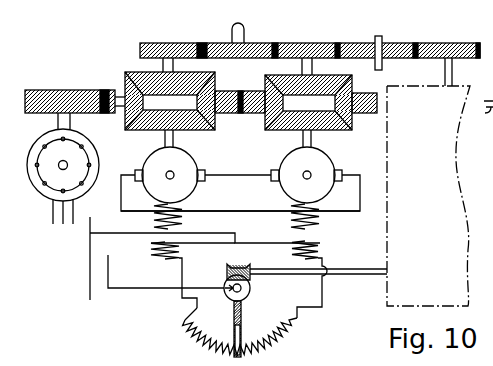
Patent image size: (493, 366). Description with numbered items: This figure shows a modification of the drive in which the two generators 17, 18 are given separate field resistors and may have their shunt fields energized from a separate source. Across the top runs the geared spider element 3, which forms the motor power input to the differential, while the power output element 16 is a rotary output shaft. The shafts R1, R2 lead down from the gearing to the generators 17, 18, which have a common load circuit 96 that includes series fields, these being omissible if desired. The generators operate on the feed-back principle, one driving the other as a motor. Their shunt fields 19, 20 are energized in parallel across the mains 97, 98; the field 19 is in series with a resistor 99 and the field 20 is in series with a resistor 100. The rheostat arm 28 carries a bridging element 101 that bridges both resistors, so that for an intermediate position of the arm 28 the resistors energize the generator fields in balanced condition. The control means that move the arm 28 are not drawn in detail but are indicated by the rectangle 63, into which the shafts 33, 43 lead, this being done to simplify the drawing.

The spider element 3 is at (112, 90).
The power output element 16 is at (244, 37).
The generator 17 is at (187, 170).
The generator 18 is at (324, 170).
The reduction gear shaft R1 is at (165, 143).
The reduction gear shaft R2 is at (303, 143).
The shaft 43 is at (453, 73).
The common load circuit 96 is at (252, 222).
The main 97 is at (90, 262).
The main 98 is at (108, 296).
The shunt field 19 is at (171, 263).
The shunt field 20 is at (319, 247).
The rheostat arm 28 is at (246, 304).
The shaft 33 is at (376, 275).
The rectangle 63 is at (387, 297).
The resistor 99 is at (228, 317).
The resistor 100 is at (204, 342).
The bridging element 101 is at (243, 312).